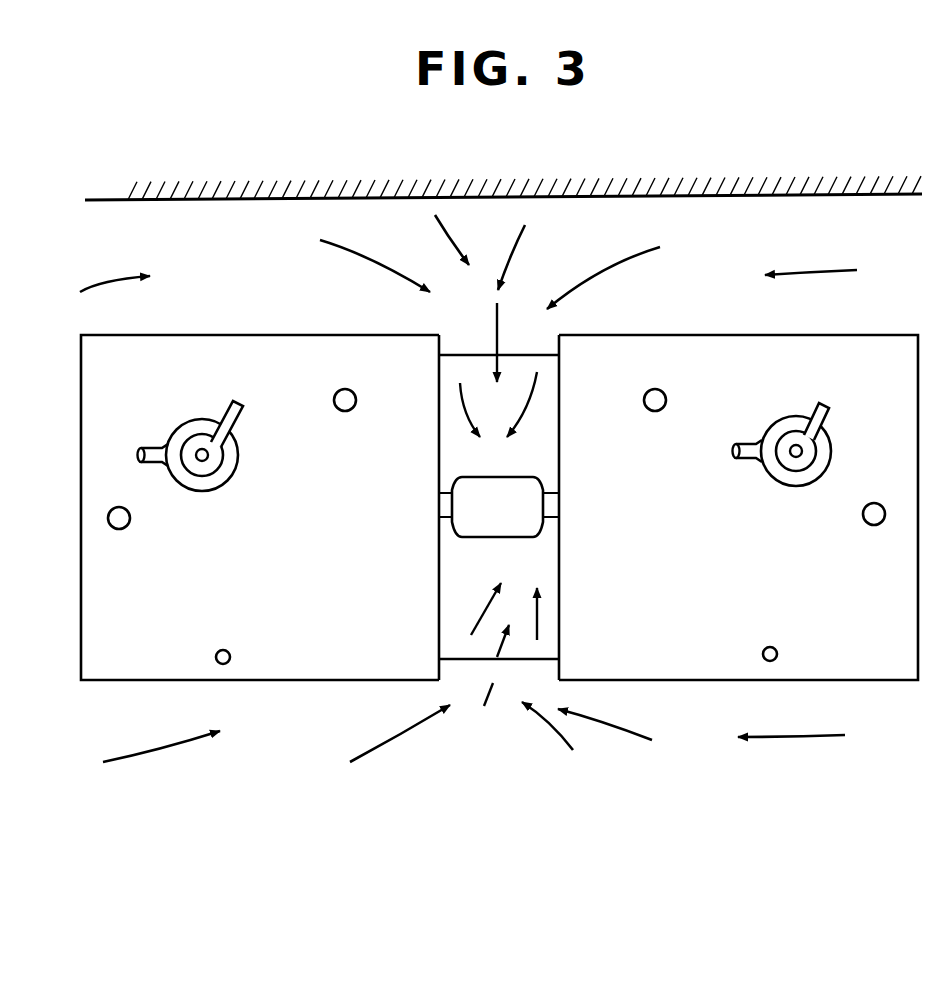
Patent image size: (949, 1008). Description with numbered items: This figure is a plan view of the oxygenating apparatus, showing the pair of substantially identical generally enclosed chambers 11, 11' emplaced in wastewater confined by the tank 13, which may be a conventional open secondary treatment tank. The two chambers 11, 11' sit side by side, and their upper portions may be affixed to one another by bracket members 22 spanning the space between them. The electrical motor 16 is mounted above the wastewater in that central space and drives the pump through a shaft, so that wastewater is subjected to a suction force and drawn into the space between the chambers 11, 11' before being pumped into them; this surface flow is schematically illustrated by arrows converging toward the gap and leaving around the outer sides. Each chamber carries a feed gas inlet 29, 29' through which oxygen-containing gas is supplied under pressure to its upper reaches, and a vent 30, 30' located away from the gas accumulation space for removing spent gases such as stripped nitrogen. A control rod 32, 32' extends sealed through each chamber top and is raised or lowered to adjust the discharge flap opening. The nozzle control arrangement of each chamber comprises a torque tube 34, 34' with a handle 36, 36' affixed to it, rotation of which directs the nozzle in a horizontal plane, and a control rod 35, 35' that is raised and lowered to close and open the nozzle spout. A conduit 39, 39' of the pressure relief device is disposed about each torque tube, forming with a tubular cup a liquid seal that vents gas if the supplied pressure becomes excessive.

The chamber 11 is at (260, 483).
The chamber 11' is at (738, 481).
The tank 13 is at (676, 196).
The electrical motor 16 is at (478, 538).
The bracket members 22 is at (439, 355).
The inlet 29 is at (128, 544).
The inlet 29' is at (867, 537).
The vent 30 is at (358, 422).
The vent 30' is at (657, 422).
The control rod 32 is at (242, 643).
The control rod 32' is at (780, 639).
The torque tube 34 is at (217, 467).
The torque tube 34' is at (796, 468).
The control rod 35 is at (190, 429).
The control rod 35' is at (831, 451).
The handle 36 is at (255, 424).
The handle 36' is at (845, 413).
The conduit 39 is at (137, 444).
The conduit 39' is at (737, 474).